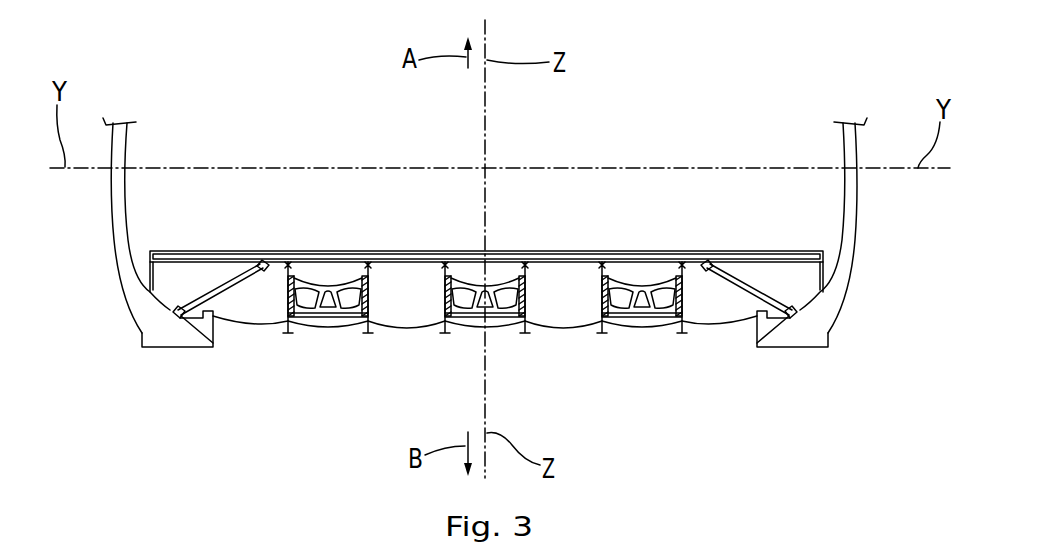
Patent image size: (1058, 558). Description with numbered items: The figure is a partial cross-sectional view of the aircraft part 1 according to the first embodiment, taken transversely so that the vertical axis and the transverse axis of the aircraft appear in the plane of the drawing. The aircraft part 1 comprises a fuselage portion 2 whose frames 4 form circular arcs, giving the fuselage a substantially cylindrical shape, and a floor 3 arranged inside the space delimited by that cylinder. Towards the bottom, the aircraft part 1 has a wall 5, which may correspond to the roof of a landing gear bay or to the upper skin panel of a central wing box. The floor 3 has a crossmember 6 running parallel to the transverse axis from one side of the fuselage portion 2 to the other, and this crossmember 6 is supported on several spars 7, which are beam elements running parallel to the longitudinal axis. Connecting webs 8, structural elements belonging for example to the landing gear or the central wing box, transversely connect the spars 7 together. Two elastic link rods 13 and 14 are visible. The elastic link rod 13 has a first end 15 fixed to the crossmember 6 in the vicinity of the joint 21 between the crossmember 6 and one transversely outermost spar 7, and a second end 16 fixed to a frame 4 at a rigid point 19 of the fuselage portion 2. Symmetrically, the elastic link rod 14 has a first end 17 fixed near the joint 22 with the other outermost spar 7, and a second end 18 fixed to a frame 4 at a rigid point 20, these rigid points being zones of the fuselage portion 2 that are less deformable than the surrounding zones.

The aircraft part 1 is at (880, 78).
The fuselage portion 2 is at (908, 116).
The floor 3 is at (734, 216).
The frames 4 is at (858, 205).
The wall 5 is at (640, 353).
The crossmembers 6 is at (637, 252).
The spars 7 is at (291, 328).
The connecting webs 8 is at (637, 313).
The elastic link rod 13 is at (770, 283).
The elastic link rod 14 is at (173, 311).
The first end of elastic link rod 13 15 is at (695, 262).
The second end of elastic link rod 13 16 is at (795, 316).
The first end of elastic link rod 14 17 is at (197, 283).
The second end of elastic link rod 14 18 is at (176, 318).
The rigid point 19 is at (808, 343).
The rigid point 20 is at (171, 340).
The joint 21 is at (708, 294).
The joint 22 is at (267, 290).